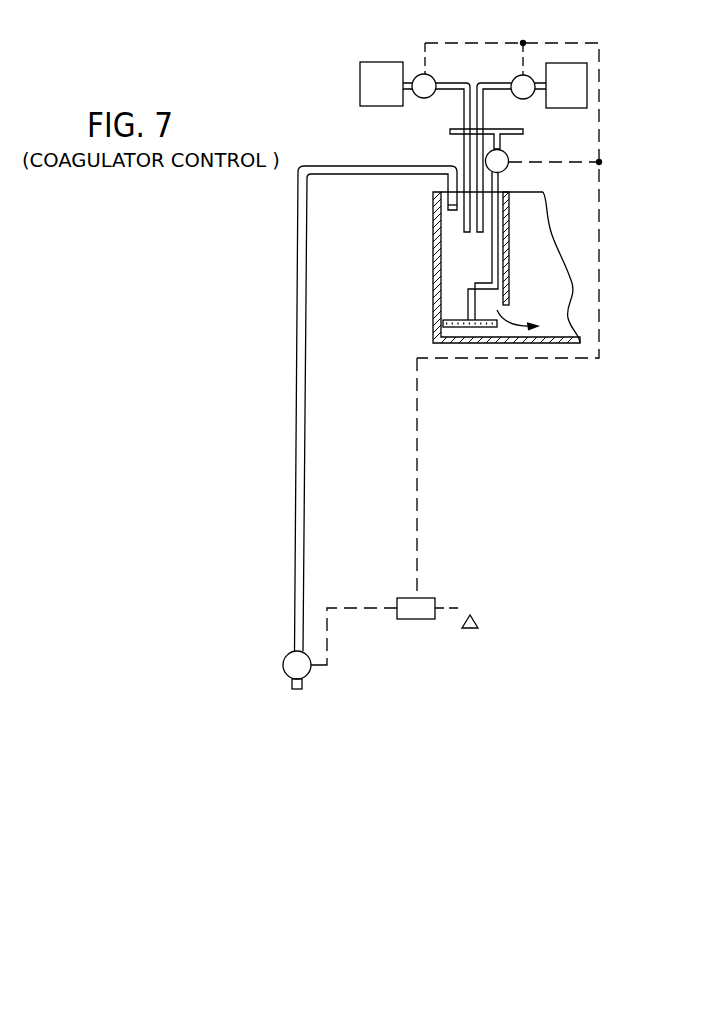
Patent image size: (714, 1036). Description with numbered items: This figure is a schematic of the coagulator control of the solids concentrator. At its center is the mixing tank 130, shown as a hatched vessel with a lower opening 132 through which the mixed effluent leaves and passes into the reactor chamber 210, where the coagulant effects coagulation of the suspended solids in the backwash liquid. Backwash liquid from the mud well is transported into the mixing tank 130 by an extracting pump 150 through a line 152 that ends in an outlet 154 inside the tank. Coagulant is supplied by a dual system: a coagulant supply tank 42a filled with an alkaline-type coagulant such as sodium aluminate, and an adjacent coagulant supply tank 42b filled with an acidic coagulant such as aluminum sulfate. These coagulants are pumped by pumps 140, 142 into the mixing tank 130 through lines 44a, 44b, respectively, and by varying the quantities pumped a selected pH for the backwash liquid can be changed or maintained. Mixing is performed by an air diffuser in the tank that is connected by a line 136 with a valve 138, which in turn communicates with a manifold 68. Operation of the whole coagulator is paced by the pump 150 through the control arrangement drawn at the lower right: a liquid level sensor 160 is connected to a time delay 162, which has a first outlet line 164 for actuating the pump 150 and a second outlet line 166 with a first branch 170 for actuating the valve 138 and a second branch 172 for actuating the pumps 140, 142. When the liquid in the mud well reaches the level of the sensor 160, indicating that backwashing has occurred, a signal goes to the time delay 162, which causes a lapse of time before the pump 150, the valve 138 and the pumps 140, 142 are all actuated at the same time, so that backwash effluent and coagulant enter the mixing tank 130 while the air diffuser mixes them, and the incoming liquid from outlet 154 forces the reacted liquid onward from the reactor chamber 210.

The coagulant supply tank 42a is at (373, 57).
The coagulant supply tank 42b is at (569, 58).
The pump 140 is at (428, 73).
The pump 142 is at (517, 75).
The second branch 172 is at (599, 72).
The line 44a is at (462, 113).
The line 44b is at (486, 112).
The manifold 68 is at (524, 129).
The valve 138 is at (507, 152).
The first branch 170 is at (572, 163).
The line 136 is at (500, 181).
The mixing tank 130 is at (509, 232).
The reactor chamber 210 is at (558, 270).
The outlet 154 is at (444, 213).
The lower opening 132 is at (555, 317).
The second outlet line 166 is at (418, 430).
The line 152 is at (303, 490).
The time delay 162 is at (425, 597).
The liquid level sensor 160 is at (479, 622).
The first outlet line 164 is at (327, 635).
The extracting pump 150 is at (308, 673).